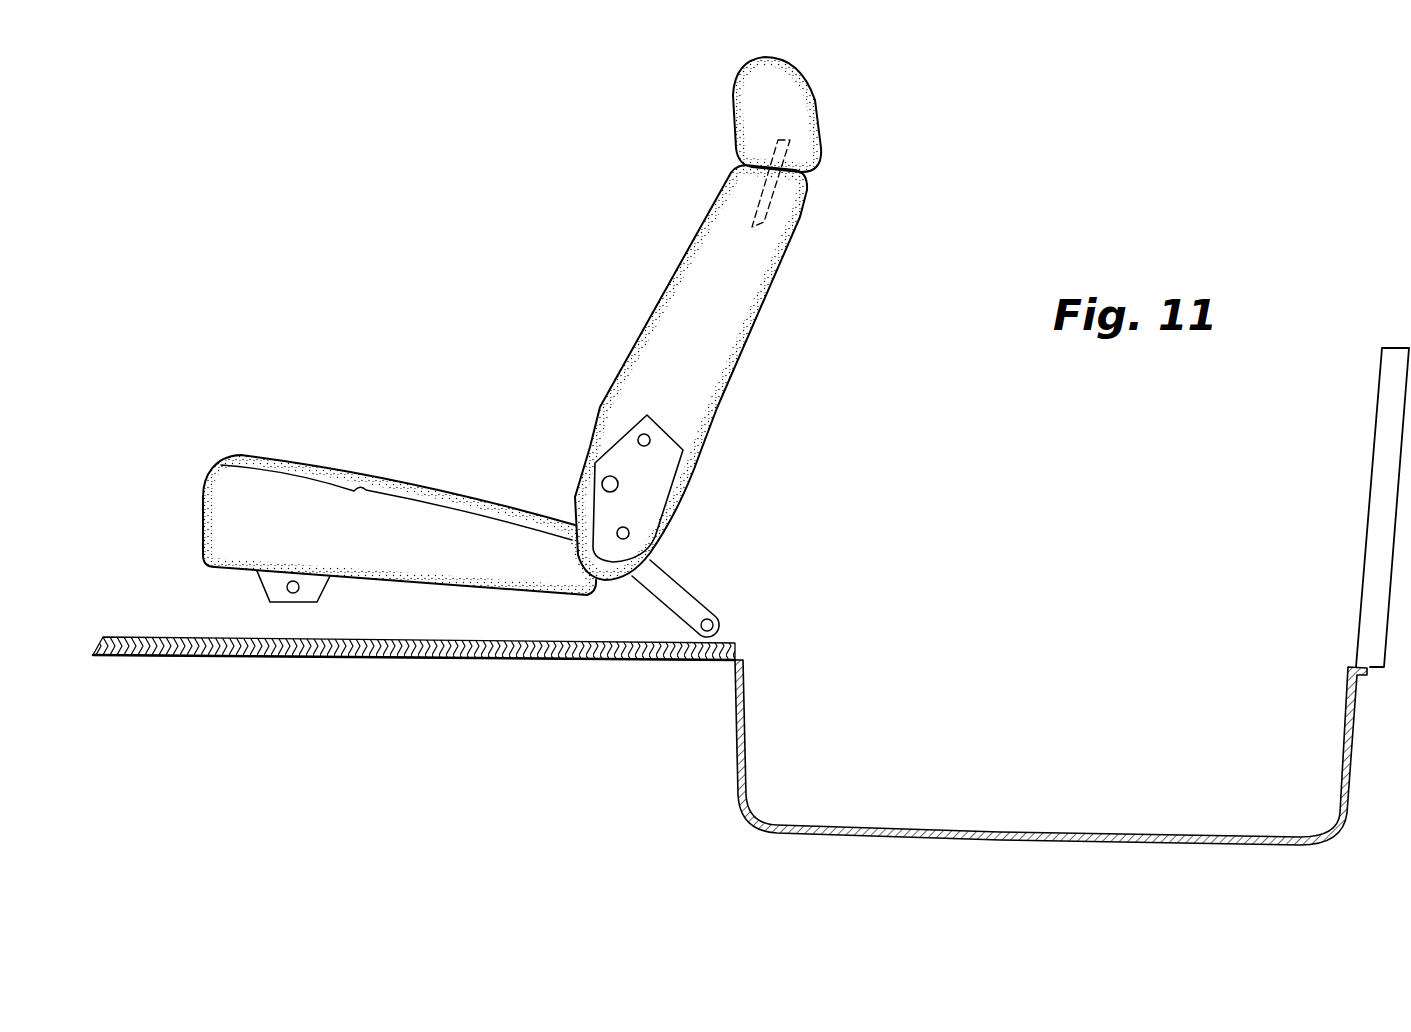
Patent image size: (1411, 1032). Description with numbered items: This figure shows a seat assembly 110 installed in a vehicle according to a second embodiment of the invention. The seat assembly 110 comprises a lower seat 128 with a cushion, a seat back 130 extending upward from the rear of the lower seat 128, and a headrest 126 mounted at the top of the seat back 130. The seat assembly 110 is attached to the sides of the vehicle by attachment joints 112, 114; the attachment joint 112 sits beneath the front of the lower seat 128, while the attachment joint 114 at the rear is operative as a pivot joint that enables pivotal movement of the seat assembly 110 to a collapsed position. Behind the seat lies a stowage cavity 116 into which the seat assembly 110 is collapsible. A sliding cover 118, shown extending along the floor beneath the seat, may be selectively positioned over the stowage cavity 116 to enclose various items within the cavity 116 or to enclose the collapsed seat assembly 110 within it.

The seat assembly 110 is at (372, 331).
The attachment joint 112 is at (293, 596).
The attachment joint 114 is at (718, 623).
The stowage cavity 116 is at (1023, 833).
The sliding cover 118 is at (663, 650).
The headrest 126 is at (810, 112).
The lower seat 128 is at (378, 495).
The seat back 130 is at (770, 277).